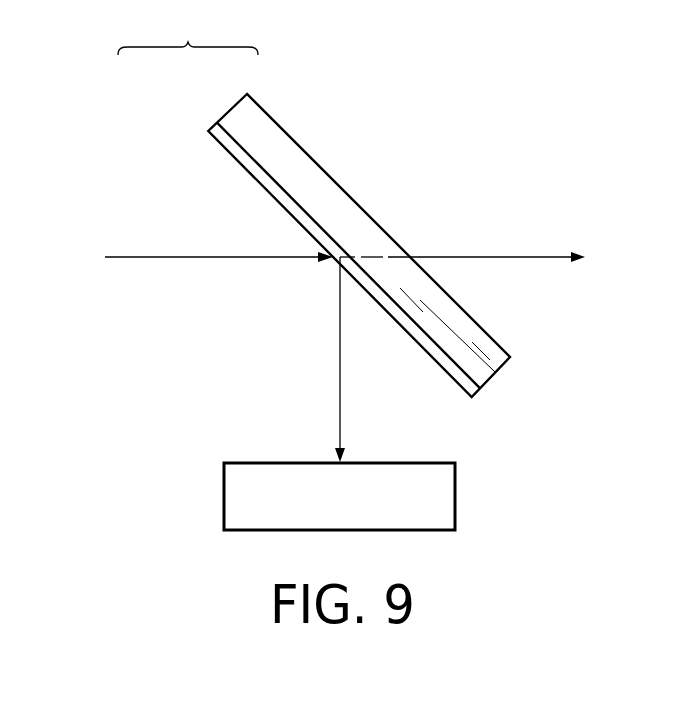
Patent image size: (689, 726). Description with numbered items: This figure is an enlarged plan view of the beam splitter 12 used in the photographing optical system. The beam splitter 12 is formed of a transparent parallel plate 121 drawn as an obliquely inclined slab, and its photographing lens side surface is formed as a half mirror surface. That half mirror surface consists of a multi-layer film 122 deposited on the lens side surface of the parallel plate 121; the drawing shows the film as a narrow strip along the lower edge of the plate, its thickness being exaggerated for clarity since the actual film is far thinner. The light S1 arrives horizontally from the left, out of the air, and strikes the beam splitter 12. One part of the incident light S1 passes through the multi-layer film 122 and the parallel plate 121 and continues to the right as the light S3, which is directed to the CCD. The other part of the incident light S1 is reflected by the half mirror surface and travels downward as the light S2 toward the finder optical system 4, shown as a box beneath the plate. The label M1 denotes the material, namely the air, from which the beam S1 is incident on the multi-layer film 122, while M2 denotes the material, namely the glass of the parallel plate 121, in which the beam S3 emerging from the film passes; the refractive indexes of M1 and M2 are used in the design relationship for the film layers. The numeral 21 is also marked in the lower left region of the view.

The beam splitter 12 is at (434, 109).
The transparent parallel plate 121 is at (279, 137).
The multi-layer film 122 is at (227, 153).
The optical path region 21 is at (215, 340).
The finder optical system 4 is at (456, 498).
The material from which the beam is incident M1 is at (80, 184).
The material in which the emerged beam passes M2 is at (306, 184).
The incident light S1 is at (153, 257).
The reflected light beam to finder S2 is at (340, 392).
The transmitted light S3 is at (512, 258).